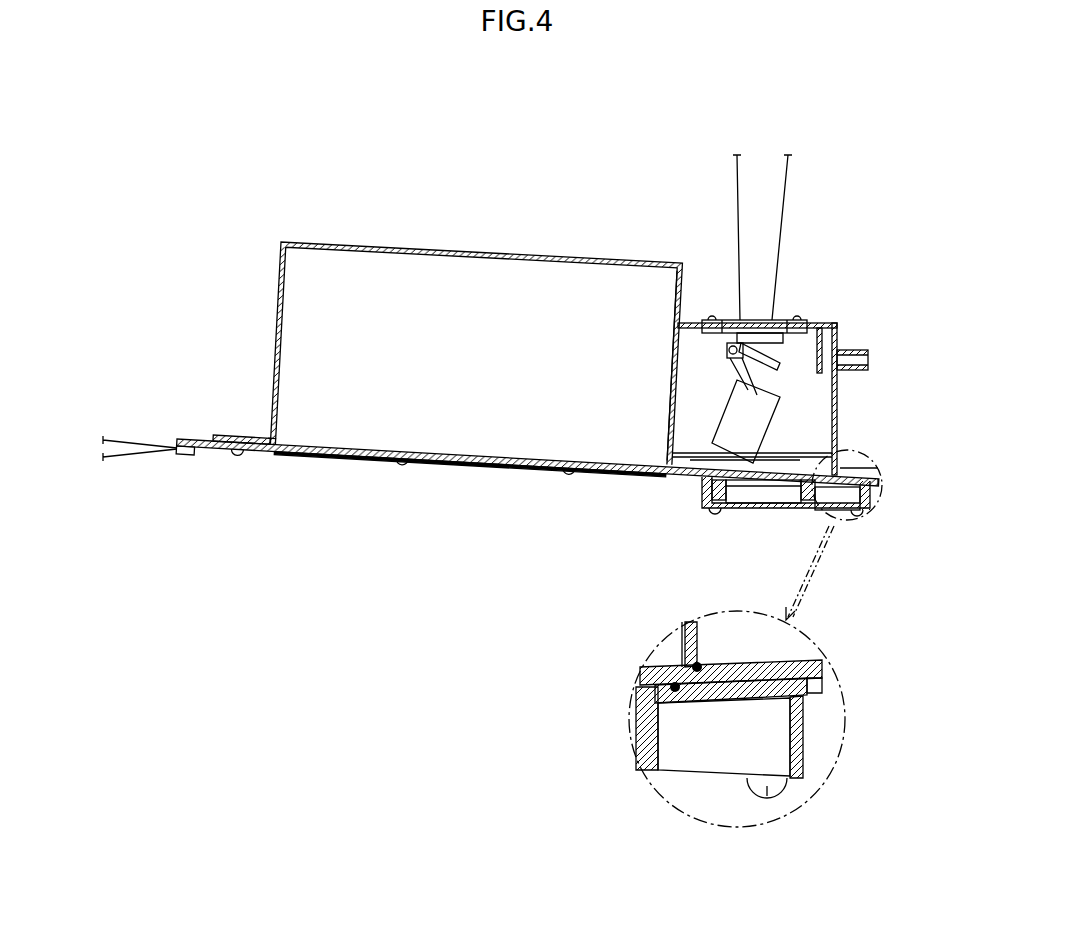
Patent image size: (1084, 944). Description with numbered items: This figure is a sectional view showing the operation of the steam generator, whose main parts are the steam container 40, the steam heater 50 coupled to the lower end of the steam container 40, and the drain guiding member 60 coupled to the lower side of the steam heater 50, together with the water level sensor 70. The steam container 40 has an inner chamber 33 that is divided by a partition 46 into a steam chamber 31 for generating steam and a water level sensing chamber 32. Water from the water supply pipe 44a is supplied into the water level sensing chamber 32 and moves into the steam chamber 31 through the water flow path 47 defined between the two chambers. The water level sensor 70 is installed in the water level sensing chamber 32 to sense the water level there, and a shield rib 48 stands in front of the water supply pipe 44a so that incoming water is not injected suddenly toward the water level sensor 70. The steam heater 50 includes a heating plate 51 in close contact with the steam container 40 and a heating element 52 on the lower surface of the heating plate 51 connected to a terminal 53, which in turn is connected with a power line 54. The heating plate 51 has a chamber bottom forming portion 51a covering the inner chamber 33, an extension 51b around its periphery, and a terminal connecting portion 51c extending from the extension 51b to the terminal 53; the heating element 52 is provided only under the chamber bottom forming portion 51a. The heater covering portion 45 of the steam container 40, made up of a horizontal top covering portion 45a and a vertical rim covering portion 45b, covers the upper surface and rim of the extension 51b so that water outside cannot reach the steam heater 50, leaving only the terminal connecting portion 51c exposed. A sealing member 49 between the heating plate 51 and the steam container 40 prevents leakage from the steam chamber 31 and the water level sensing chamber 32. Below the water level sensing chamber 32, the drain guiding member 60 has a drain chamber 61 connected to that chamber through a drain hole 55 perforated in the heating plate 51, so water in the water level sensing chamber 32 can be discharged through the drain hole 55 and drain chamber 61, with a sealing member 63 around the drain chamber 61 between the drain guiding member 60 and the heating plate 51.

The steam chamber 31 is at (482, 375).
The water level sensing chamber 32 is at (818, 421).
The inner chamber 33 is at (498, 312).
The steam container 40 is at (528, 254).
The water supply pipe 44a is at (855, 352).
The heater covering portion 45 is at (882, 468).
The top covering portion 45a is at (850, 467).
The rim covering portion 45b is at (882, 482).
The partition 46 is at (670, 357).
The water flow path 47 is at (653, 477).
The shield rib 48 is at (822, 330).
The sealing member 49 is at (268, 440).
The steam heater 50 is at (173, 462).
The heating plate 51 is at (180, 432).
The chamber bottom forming portion 51a is at (448, 464).
The extension 51b is at (845, 490).
The terminal connecting portion 51c is at (213, 436).
The heating element 52 is at (318, 462).
The terminal 53 is at (192, 457).
The power line 54 is at (140, 452).
The drain hole 55 is at (800, 470).
The drain guiding member 60 is at (873, 503).
The drain chamber 61 is at (750, 490).
The sealing member 63 is at (705, 485).
The water level sensor 70 is at (782, 314).